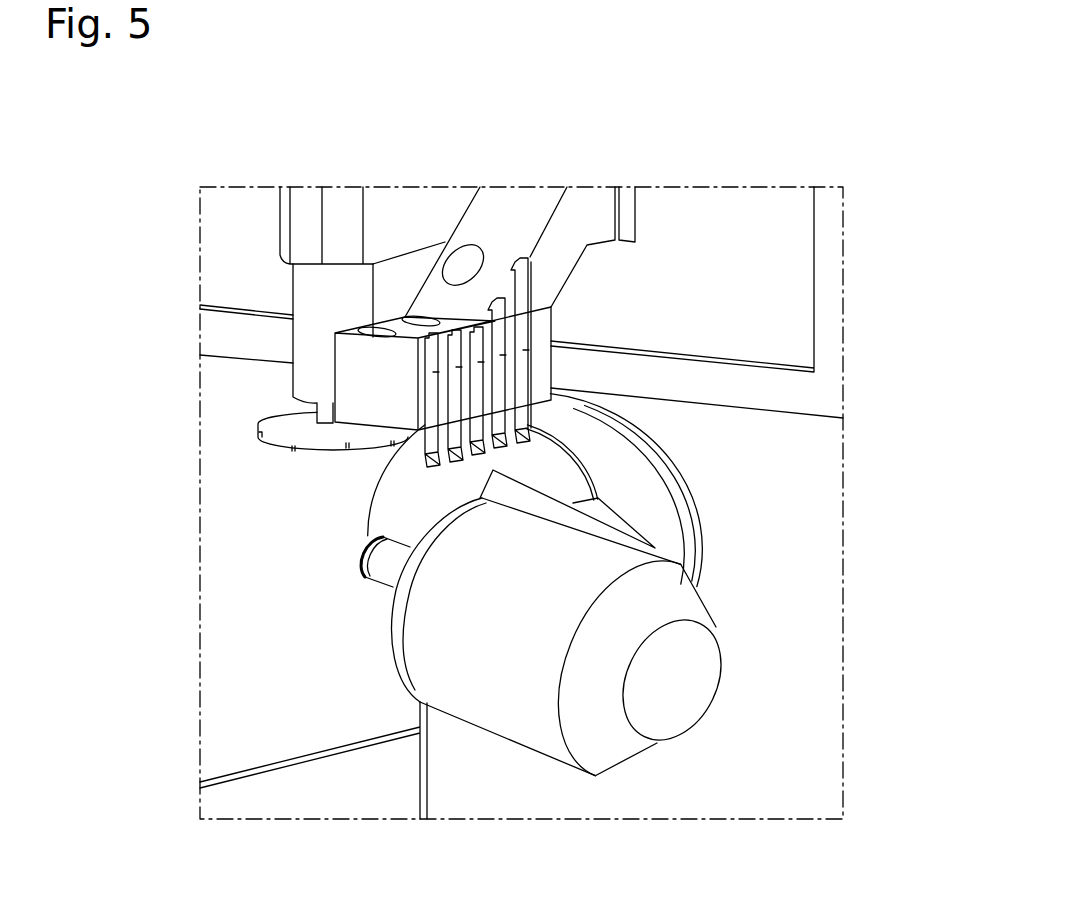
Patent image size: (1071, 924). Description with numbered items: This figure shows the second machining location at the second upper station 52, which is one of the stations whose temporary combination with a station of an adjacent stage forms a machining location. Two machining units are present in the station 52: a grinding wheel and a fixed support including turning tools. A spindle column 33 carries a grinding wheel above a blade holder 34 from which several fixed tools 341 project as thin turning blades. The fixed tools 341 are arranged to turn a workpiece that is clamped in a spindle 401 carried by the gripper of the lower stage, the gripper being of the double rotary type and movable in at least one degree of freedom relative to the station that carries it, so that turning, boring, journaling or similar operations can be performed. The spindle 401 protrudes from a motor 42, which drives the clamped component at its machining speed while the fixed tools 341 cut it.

The station 52 is at (845, 291).
The spindle column 33 is at (304, 383).
The blade holder 34 is at (533, 388).
The fixed tool 341 is at (431, 461).
The spindle 401 is at (390, 587).
The motor 42 is at (515, 700).